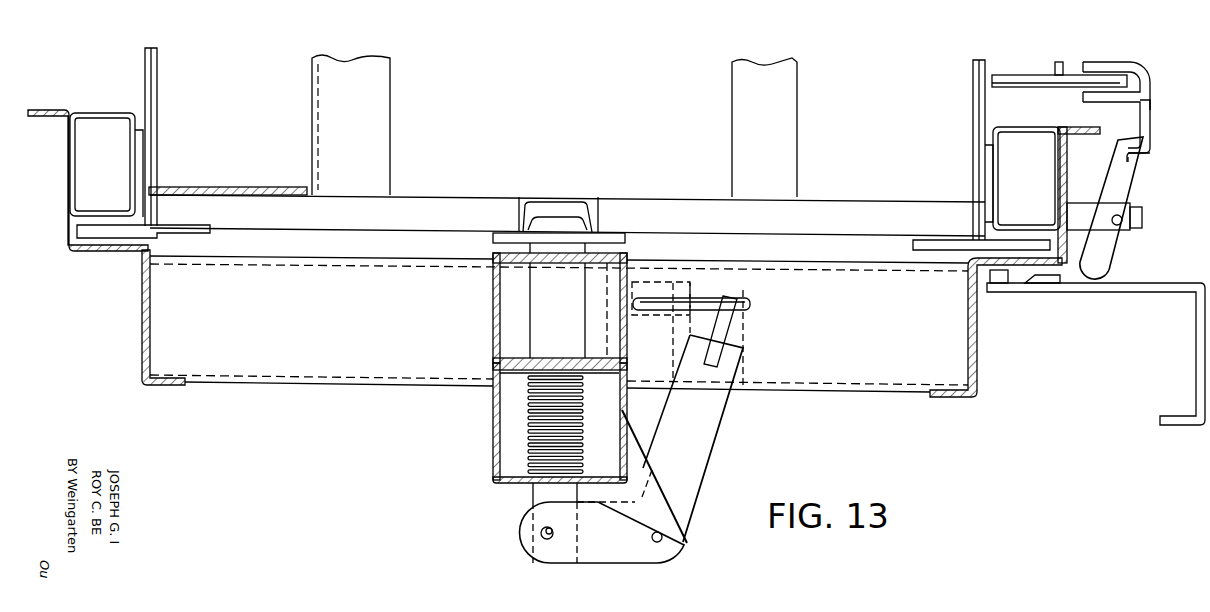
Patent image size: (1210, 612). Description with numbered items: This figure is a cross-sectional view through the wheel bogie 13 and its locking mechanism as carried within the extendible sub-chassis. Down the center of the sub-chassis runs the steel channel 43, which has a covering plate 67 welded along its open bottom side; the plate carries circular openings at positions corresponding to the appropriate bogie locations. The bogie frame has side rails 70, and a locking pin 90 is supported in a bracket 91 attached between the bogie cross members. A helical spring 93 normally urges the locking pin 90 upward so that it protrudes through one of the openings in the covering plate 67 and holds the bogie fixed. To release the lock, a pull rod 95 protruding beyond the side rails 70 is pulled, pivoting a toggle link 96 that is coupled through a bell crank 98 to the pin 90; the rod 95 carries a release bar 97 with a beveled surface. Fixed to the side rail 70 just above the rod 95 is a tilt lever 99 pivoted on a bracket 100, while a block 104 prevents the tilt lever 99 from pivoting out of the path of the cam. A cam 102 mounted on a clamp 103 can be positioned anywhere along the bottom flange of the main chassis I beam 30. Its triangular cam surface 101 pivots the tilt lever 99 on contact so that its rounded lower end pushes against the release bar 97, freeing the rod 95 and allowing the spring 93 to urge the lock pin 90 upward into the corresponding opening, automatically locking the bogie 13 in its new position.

The wheel bogie 13 is at (308, 397).
The longitudinal rail 30 is at (1012, 78).
The steel channel 43 is at (600, 207).
The covering plate 67 is at (628, 240).
The side rail 70 is at (1068, 158).
The locking pin 90 is at (537, 305).
The bracket 91 is at (492, 405).
The helical spring 93 is at (557, 442).
The pull rod 95 is at (1197, 426).
The toggle link 96 is at (752, 306).
The release bar 97 is at (1052, 284).
The bell crank 98 is at (713, 417).
The tilt lever 99 is at (1135, 173).
The bracket 100 is at (1145, 222).
The cam surface 101 is at (1157, 160).
The cam 102 is at (1150, 104).
The clamp 103 is at (1110, 63).
The block 104 is at (1000, 284).